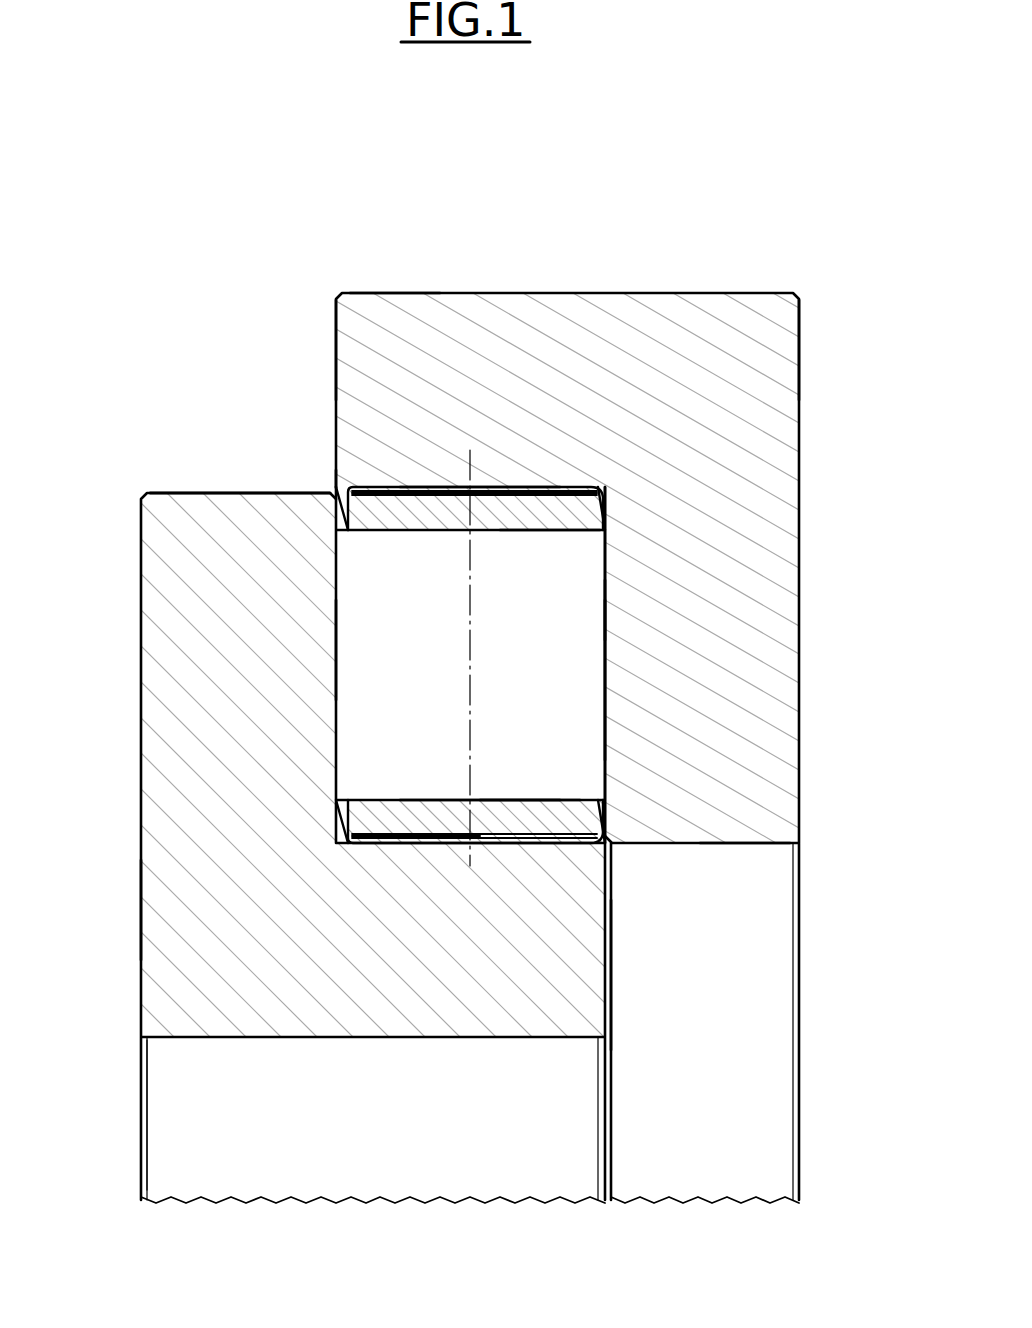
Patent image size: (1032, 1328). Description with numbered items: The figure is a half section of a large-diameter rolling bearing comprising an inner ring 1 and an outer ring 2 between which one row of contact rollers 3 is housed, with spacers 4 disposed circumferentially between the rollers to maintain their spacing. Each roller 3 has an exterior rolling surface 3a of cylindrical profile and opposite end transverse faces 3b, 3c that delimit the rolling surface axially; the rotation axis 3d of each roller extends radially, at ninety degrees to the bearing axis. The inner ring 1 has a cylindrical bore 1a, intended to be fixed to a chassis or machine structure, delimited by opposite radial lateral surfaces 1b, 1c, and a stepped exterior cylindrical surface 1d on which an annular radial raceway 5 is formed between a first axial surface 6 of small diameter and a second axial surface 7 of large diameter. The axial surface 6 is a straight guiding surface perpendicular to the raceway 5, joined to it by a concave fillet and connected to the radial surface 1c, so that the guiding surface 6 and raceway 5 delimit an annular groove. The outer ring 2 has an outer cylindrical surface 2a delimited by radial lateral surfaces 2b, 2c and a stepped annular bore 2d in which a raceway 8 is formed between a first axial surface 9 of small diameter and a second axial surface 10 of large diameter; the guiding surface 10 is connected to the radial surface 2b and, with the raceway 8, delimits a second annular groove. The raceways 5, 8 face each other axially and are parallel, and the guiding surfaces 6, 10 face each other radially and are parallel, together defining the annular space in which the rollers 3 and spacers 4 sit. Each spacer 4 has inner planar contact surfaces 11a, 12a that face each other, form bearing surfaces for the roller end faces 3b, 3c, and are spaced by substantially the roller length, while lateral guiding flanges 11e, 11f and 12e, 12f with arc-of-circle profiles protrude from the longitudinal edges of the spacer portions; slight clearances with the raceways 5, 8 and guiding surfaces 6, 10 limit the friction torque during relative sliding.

The inner ring 1 is at (141, 986).
The bore 1a is at (225, 1038).
The radial lateral surface 1b is at (141, 916).
The radial lateral surface 1c is at (605, 977).
The stepped exterior cylindrical surface 1d is at (192, 494).
The outer ring 2 is at (450, 294).
The outer cylindrical surface 2a is at (397, 292).
The radial lateral surface 2b is at (336, 349).
The radial lateral surface 2c is at (801, 350).
The stepped annular bore 2d is at (343, 488).
The contact roller 3 is at (452, 671).
The exterior rolling surface 3a is at (607, 678).
The end transverse face 3b is at (517, 801).
The end transverse face 3c is at (600, 516).
The rotation axis 3d is at (470, 462).
The spacer 4 is at (562, 508).
The raceway 5 is at (337, 655).
The first axial surface 6 is at (415, 836).
The second axial surface 7 is at (221, 493).
The raceway 8 is at (603, 624).
The first axial surface 9 is at (747, 845).
The second axial surface 10 is at (550, 500).
The inner planar contact surface 11a is at (537, 800).
The lateral guiding flange 11e is at (343, 805).
The lateral guiding flange 11f is at (605, 803).
The inner planar contact surface 12a is at (547, 530).
The lateral guiding flange 12e is at (345, 527).
The lateral guiding flange 12f is at (603, 525).